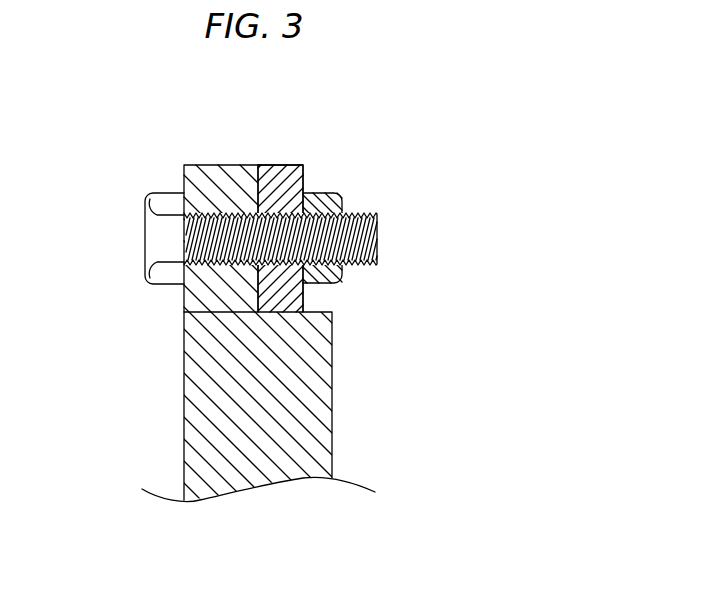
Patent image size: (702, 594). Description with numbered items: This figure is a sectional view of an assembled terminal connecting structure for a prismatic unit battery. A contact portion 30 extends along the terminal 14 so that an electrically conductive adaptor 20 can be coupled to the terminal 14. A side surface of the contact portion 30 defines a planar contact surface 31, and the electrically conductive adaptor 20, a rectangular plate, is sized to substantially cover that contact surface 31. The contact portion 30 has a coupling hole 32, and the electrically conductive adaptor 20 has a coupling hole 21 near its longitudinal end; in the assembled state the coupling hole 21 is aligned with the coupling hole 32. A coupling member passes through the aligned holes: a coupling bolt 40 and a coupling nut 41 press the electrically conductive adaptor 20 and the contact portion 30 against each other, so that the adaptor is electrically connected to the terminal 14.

The positive terminal 14 is at (307, 398).
The electrically conductive adaptor 20 is at (287, 293).
The coupling hole 21 is at (288, 208).
The contact portion 30 is at (213, 165).
The contact surface 31 is at (263, 181).
The coupling hole 32 is at (219, 267).
The coupling bolt 40 is at (157, 238).
The coupling nut 41 is at (328, 203).